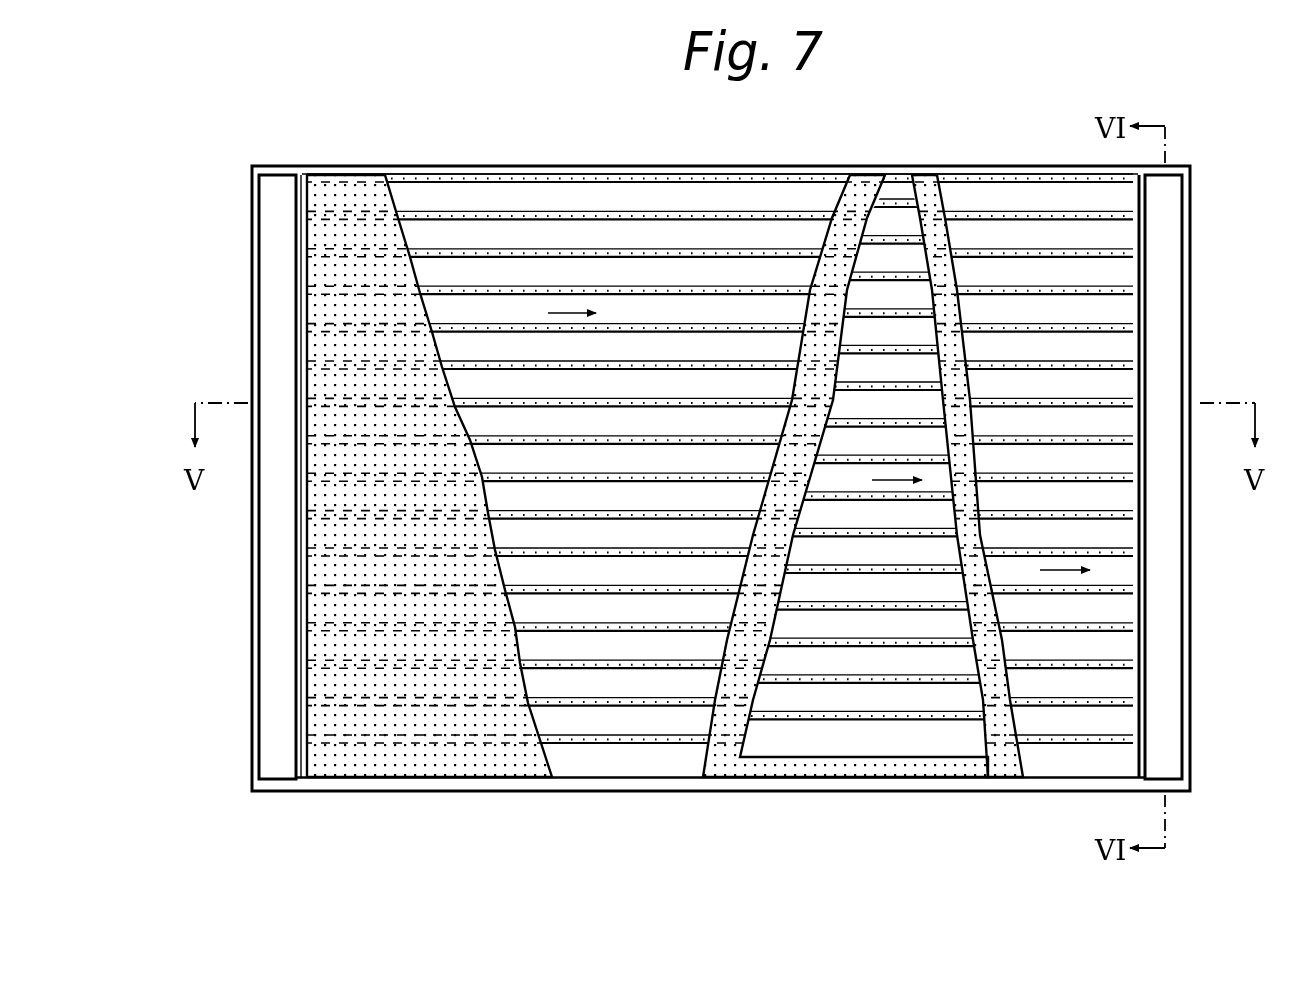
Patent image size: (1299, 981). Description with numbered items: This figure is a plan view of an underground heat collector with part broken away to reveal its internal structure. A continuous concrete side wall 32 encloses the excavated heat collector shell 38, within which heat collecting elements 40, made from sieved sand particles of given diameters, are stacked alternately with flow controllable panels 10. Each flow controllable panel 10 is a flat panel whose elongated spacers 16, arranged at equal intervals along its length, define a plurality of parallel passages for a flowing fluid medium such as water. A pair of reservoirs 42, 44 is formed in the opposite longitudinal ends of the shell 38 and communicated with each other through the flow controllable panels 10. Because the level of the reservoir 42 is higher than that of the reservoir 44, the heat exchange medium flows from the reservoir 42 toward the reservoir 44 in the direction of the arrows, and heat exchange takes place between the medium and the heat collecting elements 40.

The flow controllable unit 10 is at (720, 478).
The spacers 16 is at (490, 216).
The side wall 32 is at (705, 168).
The heat collector shell 38 is at (1195, 628).
The heat collecting element 40 is at (665, 476).
The reservoir 42 is at (270, 293).
The reservoir 44 is at (1165, 325).